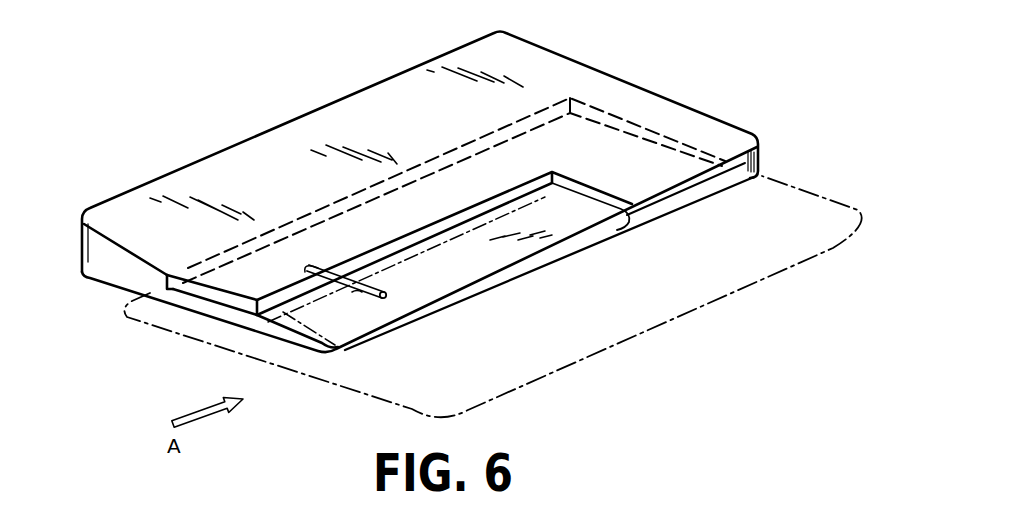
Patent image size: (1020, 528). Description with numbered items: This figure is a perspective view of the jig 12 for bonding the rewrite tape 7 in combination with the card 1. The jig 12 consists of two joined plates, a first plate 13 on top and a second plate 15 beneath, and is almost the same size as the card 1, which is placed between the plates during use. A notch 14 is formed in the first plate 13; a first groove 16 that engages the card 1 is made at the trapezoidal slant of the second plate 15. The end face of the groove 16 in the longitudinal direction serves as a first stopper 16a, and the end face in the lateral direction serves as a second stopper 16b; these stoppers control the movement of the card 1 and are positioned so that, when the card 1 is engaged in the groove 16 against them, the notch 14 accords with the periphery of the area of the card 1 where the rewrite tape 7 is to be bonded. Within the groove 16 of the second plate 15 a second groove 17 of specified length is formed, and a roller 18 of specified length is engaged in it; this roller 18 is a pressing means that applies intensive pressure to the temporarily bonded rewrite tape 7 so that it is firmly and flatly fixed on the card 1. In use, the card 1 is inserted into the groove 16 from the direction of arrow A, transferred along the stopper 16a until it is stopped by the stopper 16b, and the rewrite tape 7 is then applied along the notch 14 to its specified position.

The card 1 is at (673, 320).
The rewrite tape 7 is at (296, 357).
The jig 12 is at (305, 113).
The first plate 13 is at (226, 168).
The notch 14 is at (462, 216).
The second plate 15 is at (100, 270).
The first groove 16 is at (263, 320).
The first stopper 16a is at (170, 298).
The second stopper 16b is at (603, 112).
The second groove 17 is at (357, 293).
The roller 18 is at (384, 284).